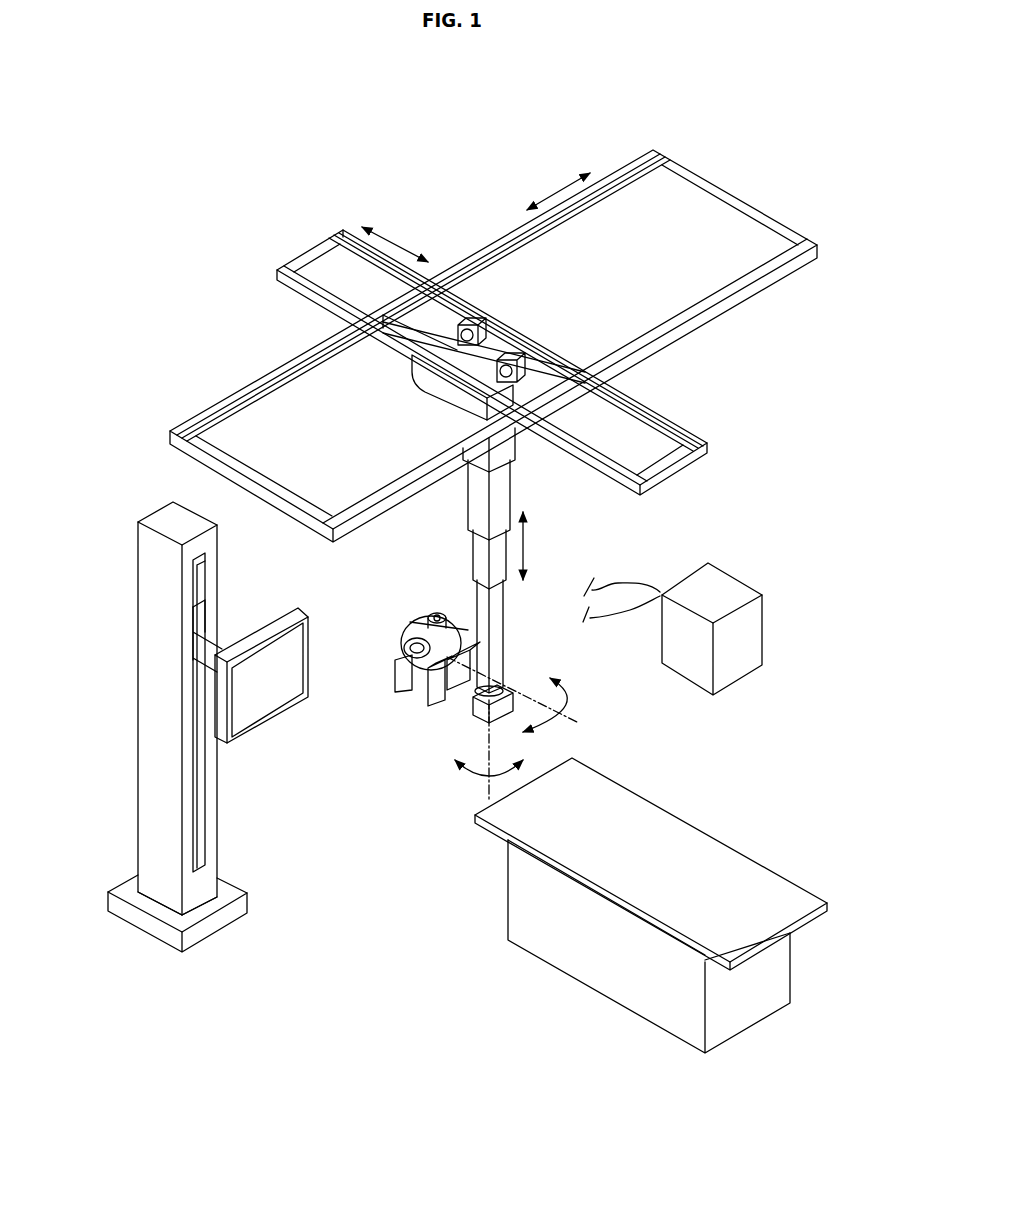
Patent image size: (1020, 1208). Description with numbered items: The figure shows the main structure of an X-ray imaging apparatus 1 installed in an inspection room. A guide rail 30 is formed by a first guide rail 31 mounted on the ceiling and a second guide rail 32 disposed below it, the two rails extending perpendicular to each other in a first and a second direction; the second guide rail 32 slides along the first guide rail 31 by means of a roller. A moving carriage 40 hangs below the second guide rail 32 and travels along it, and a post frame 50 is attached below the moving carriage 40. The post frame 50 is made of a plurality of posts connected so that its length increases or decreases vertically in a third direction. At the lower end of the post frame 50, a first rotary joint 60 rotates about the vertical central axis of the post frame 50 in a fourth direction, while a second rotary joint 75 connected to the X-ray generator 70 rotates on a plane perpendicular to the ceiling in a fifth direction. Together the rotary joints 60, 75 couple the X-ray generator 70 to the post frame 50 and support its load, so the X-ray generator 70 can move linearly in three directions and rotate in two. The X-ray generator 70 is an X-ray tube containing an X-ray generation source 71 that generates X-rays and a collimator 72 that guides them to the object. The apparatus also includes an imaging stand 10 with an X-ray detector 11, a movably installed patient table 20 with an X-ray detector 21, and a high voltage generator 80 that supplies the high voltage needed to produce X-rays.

The X-ray imaging apparatus 1 is at (463, 108).
The imaging stand 10 is at (133, 588).
The X-ray detector 11 is at (264, 704).
The patient table 20 is at (651, 894).
The X-ray detector 21 is at (727, 856).
The guide rail 30 is at (493, 346).
The first guide rail 31 is at (658, 342).
The second guide rail 32 is at (715, 345).
The moving carriage 40 is at (418, 384).
The post frame 50 is at (476, 504).
The first rotary joint 60 is at (470, 700).
The X-ray generator 70 is at (415, 649).
The X-ray generation source 71 is at (405, 660).
The collimator 72 is at (413, 690).
The second rotary joint 75 is at (424, 703).
The high voltage generator 80 is at (737, 587).